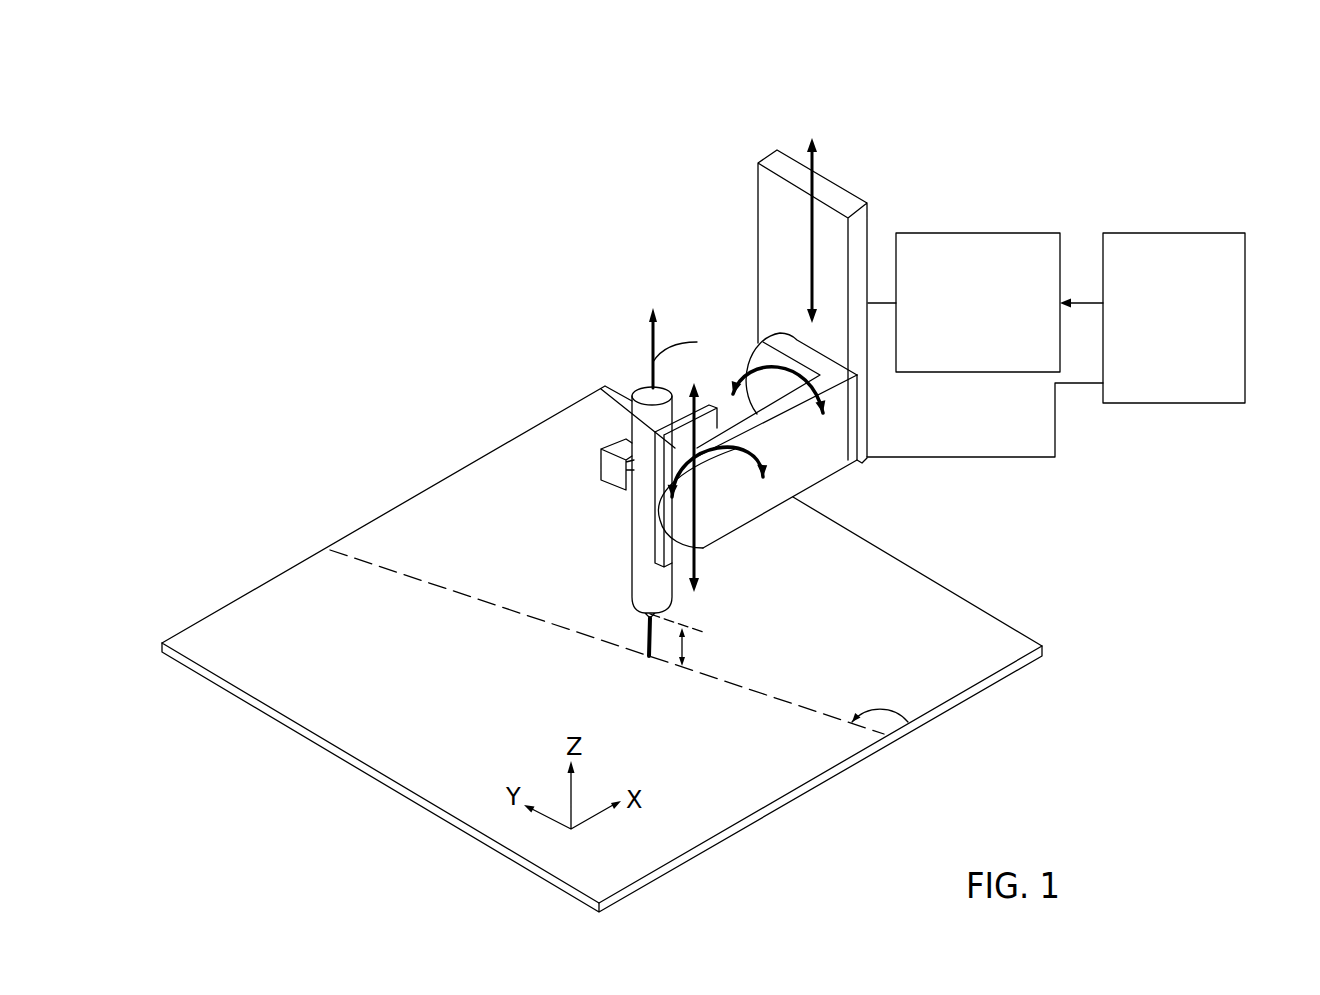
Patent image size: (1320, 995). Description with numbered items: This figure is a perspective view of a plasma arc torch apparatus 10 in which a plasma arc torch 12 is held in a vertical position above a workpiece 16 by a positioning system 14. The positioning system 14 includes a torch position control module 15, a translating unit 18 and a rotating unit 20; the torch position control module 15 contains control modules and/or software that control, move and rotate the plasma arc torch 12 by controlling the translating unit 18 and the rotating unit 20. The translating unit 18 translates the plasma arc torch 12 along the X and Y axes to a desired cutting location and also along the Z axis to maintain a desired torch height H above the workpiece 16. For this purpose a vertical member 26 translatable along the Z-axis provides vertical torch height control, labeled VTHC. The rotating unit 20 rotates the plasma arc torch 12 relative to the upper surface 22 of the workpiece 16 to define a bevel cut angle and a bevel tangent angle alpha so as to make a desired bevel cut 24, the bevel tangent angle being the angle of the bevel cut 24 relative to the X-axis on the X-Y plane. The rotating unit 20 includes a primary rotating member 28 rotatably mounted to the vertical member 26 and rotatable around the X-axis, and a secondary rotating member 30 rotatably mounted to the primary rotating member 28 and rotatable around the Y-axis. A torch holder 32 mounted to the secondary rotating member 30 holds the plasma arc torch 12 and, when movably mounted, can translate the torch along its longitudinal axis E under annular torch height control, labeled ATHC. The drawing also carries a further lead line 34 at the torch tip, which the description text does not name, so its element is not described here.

The plasma arc torch apparatus 10 is at (475, 207).
The plasma arc torch 12 is at (648, 392).
The positioning system 14 is at (1056, 272).
The torch position control module 15 is at (1148, 233).
The workpiece 16 is at (267, 577).
The translating unit 18 is at (1002, 232).
The rotating unit 20 is at (794, 462).
The upper surface 22 is at (409, 736).
The bevel cut 24 is at (767, 697).
The vertical member 26 is at (757, 280).
The primary rotating member 28 is at (812, 467).
The secondary rotating member 30 is at (628, 397).
The torch holder 32 is at (610, 470).
The plasma arc 34 is at (645, 615).